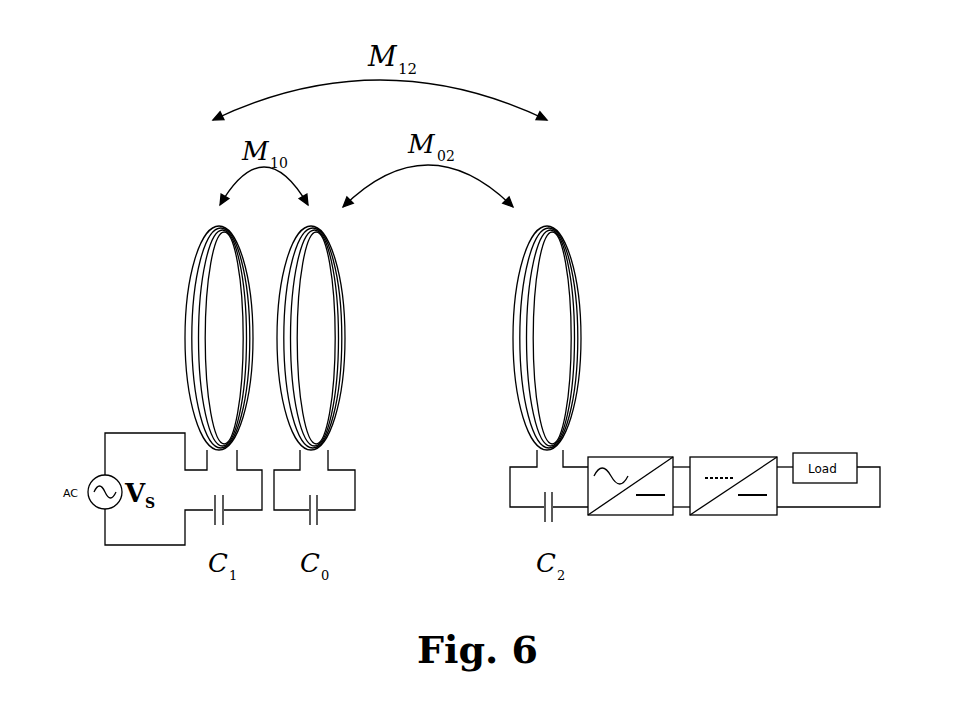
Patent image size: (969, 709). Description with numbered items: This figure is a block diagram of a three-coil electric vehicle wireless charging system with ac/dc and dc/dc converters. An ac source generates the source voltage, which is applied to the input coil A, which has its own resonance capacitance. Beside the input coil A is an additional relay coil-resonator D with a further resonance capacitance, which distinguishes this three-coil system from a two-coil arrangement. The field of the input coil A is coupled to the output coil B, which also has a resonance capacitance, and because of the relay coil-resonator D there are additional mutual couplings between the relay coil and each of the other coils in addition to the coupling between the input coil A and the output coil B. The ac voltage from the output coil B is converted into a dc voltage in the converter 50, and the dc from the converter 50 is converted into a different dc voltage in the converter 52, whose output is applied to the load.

The converter 50 is at (630, 453).
The converter 52 is at (740, 453).
The input coil A is at (183, 225).
The output coil B is at (590, 252).
The relay coil-resonator D is at (367, 303).